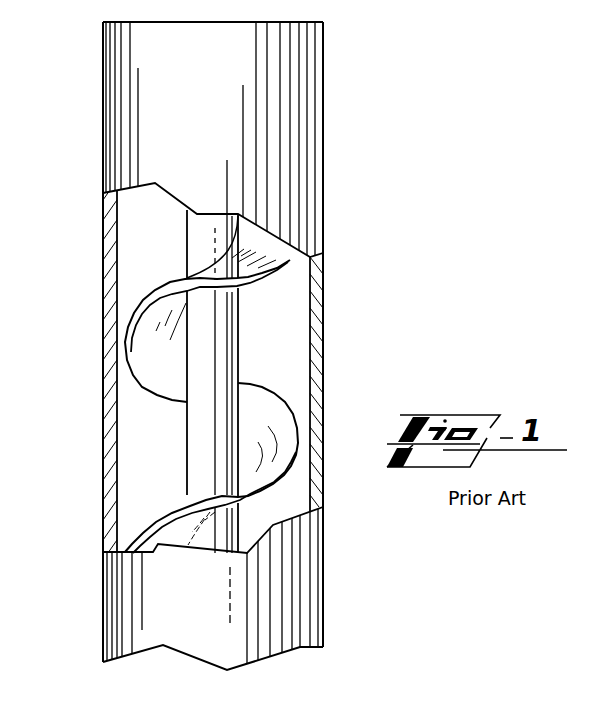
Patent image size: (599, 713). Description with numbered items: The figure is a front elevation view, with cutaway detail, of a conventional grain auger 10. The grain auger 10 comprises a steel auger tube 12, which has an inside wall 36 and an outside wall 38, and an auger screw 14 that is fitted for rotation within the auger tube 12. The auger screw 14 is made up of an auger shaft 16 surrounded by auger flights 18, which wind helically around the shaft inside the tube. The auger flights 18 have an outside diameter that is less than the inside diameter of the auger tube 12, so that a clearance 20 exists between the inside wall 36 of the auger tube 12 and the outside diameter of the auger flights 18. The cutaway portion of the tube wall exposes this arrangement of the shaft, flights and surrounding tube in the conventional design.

The grain auger 10 is at (367, 132).
The auger tube 12 is at (323, 207).
The auger screw 14 is at (260, 385).
The auger shaft 16 is at (240, 322).
The auger flights 18 is at (293, 465).
The clearance 20 is at (122, 333).
The inside wall 36 is at (118, 442).
The outside wall 38 is at (103, 453).